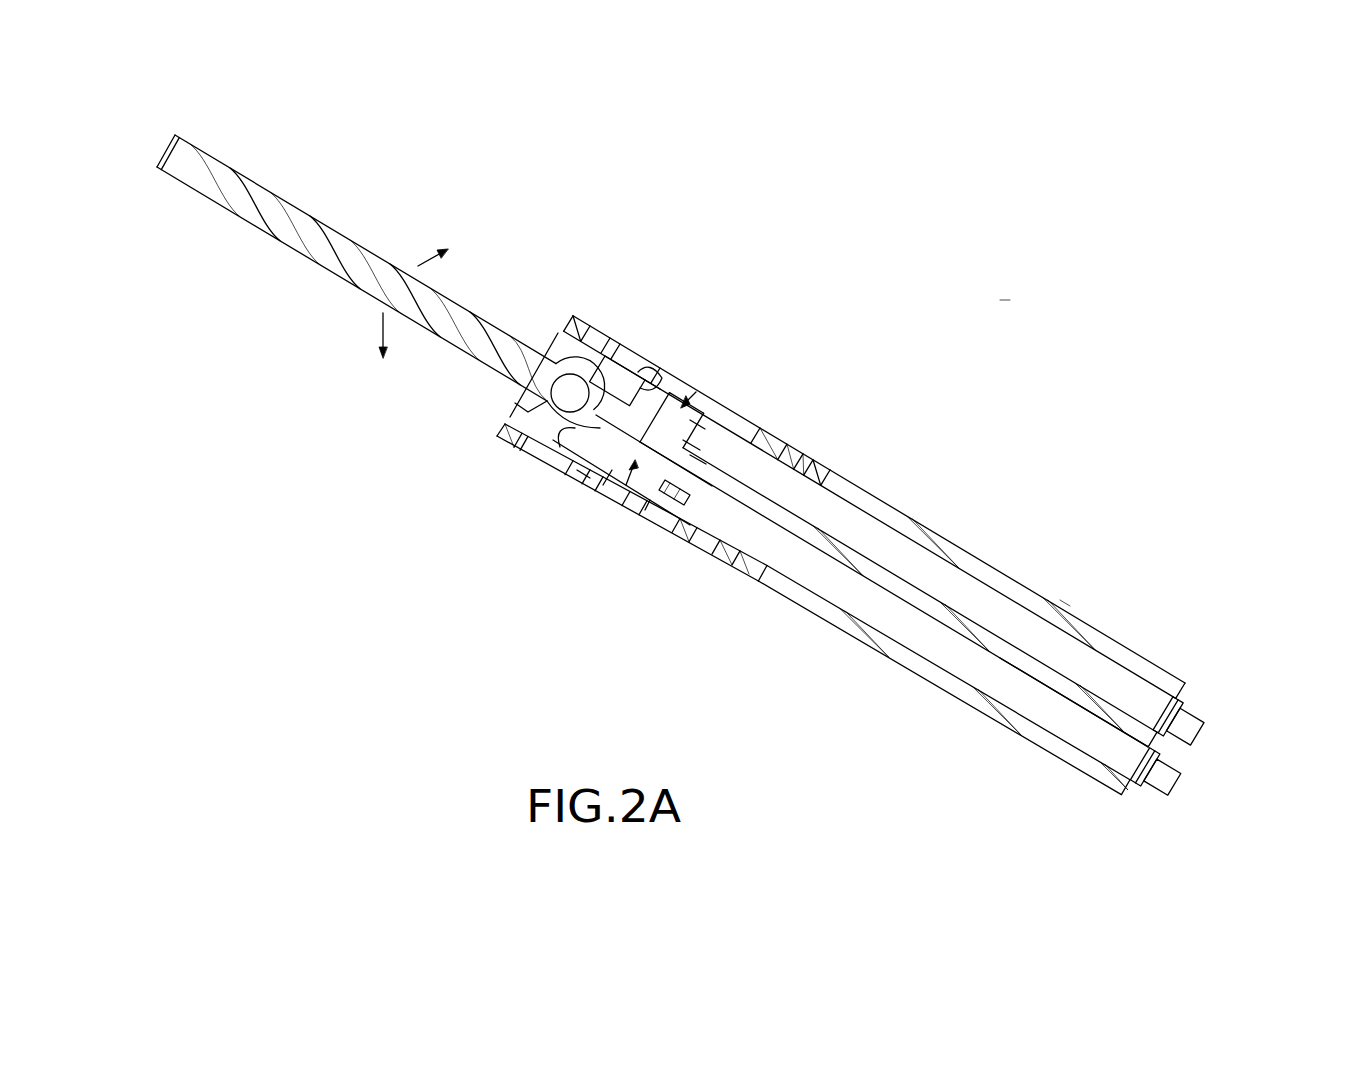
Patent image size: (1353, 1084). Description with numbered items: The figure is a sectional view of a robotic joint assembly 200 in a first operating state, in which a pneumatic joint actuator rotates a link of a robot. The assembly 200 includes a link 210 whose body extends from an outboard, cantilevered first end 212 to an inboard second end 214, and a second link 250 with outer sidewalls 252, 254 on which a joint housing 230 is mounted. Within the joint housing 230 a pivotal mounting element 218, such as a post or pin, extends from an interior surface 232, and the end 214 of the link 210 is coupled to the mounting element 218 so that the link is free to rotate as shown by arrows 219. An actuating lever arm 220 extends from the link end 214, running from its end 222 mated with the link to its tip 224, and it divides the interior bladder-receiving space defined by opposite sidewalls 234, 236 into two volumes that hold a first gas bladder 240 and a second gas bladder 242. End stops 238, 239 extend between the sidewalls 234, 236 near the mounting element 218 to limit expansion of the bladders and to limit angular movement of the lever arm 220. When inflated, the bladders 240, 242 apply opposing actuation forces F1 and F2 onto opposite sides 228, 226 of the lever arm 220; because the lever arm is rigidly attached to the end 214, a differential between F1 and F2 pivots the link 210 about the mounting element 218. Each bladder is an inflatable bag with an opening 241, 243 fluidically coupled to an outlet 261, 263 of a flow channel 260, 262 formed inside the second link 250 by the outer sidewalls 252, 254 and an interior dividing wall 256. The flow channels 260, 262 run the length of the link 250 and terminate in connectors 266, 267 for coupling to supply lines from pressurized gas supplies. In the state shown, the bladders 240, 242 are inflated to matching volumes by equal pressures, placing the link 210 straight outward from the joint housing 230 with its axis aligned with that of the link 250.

The robotic joint assembly 200 is at (928, 287).
The link 210 is at (270, 191).
The first end 212 is at (161, 172).
The second end 214 is at (523, 415).
The pivotal mounting element 218 is at (566, 372).
The arrows 219 is at (418, 266).
The actuating lever arm 220 is at (685, 398).
The end 222 is at (628, 352).
The tip 224 is at (683, 452).
The side 226 is at (672, 375).
The side 228 is at (597, 507).
The joint housing 230 is at (490, 485).
The interior surface 232 is at (502, 436).
The sidewall 234 is at (610, 523).
The sidewall 236 is at (648, 368).
The end stop 238 is at (560, 447).
The end stop 239 is at (610, 358).
The first gas bladder 240 is at (577, 480).
The opening 241 is at (640, 520).
The second gas bladder 242 is at (705, 417).
The opening 243 is at (700, 445).
The second link 250 is at (1078, 585).
The outer sidewall 252 is at (1128, 650).
The outer sidewall 254 is at (1018, 738).
The dividing wall 256 is at (1095, 715).
The flow channel 260 is at (995, 675).
The outlet 261 is at (680, 492).
The flow channel 262 is at (955, 582).
The outlet 263 is at (702, 455).
The connector 266 is at (1145, 818).
The connector 267 is at (1222, 692).
The actuation force F1 is at (630, 500).
The actuation force F2 is at (700, 393).